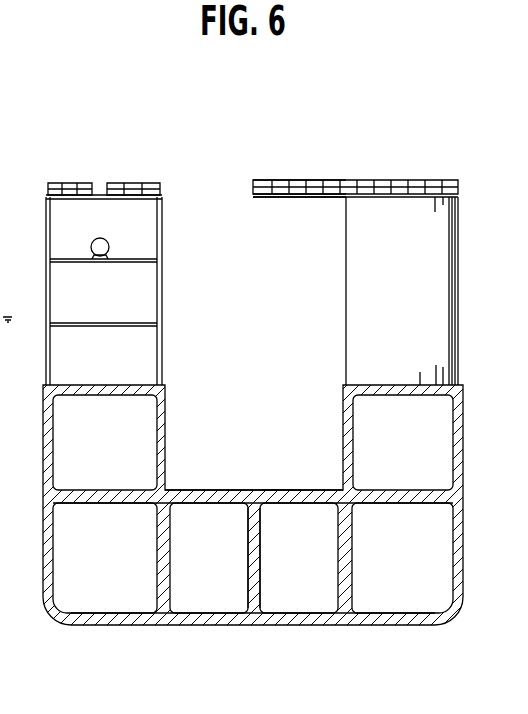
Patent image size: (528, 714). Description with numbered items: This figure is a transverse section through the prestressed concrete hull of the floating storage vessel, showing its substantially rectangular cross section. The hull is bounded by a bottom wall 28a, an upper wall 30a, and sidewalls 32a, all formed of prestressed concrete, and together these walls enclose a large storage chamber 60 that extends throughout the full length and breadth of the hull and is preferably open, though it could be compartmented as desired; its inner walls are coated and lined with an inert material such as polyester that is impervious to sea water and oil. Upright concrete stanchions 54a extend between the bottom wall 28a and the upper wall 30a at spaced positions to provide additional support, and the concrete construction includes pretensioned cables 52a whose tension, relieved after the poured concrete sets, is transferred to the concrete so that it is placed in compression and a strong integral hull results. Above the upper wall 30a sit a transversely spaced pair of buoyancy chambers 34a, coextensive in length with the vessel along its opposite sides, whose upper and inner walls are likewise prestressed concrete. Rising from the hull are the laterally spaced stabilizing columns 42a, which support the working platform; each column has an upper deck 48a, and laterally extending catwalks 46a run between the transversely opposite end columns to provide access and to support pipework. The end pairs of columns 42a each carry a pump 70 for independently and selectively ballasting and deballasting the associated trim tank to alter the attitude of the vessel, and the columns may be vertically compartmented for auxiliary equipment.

The bottom wall 28a is at (245, 625).
The upper wall 30a is at (219, 490).
The sidewalls 32a is at (43, 532).
The buoyancy chambers 34a is at (113, 449).
The stabilizing columns 42a is at (162, 310).
The laterally extending catwalks 46a is at (298, 181).
The upper decks 48a is at (100, 183).
The pretensioned cables 52a is at (293, 490).
The upright concrete stanchions 54a is at (260, 546).
The central compartment 60 is at (217, 570).
The buoy 70 is at (104, 241).